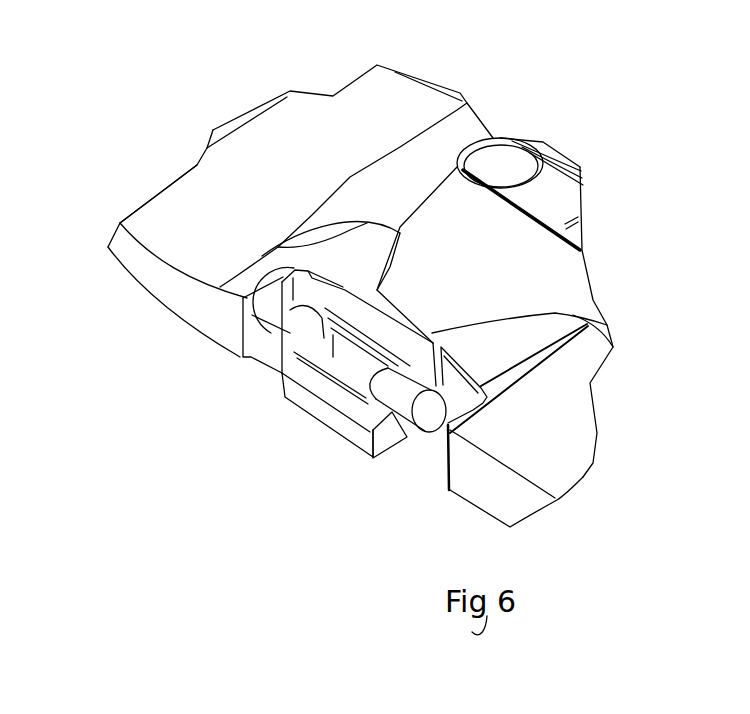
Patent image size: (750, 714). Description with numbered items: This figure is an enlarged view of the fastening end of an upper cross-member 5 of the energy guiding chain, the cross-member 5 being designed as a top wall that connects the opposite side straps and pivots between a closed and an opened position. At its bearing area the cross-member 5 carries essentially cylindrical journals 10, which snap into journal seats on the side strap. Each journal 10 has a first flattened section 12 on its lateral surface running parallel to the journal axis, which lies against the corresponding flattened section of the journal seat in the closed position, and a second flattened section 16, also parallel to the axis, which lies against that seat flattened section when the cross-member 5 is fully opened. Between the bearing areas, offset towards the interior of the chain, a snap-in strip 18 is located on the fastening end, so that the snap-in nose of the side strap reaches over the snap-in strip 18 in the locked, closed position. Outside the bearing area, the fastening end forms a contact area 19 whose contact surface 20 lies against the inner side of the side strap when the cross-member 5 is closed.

The upper cross-member 5 is at (622, 273).
The journal 10 is at (273, 312).
The first flattened section 12 is at (248, 357).
The second flattened section 16 is at (281, 295).
The snap-in strip 18 is at (323, 388).
The contact area 19 is at (198, 223).
The contact surface 20 is at (183, 290).